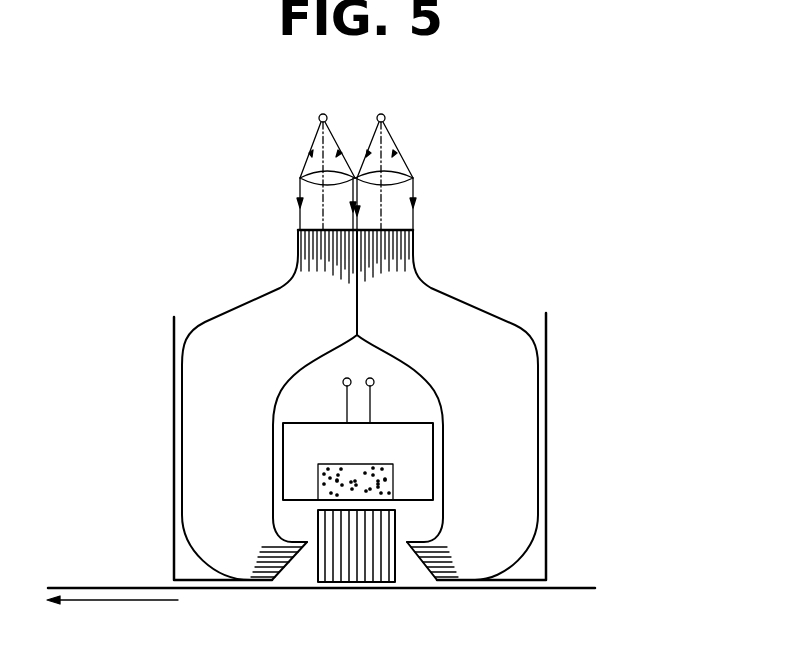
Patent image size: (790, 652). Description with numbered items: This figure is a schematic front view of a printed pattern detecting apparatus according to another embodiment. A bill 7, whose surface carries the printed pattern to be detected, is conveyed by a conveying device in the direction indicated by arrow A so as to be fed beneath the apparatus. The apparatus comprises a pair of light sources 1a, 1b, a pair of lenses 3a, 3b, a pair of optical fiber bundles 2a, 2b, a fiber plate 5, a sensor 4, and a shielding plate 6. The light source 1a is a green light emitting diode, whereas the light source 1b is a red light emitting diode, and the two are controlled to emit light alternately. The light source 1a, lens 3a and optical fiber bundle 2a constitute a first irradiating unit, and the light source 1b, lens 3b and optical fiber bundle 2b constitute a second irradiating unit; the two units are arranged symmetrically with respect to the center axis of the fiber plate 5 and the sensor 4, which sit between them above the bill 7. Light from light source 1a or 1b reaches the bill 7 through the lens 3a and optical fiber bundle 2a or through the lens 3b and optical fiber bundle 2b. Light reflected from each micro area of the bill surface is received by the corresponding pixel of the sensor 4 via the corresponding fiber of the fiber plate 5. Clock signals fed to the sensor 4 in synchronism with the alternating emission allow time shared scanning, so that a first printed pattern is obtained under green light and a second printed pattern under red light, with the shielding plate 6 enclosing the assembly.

The light source 1a is at (319, 118).
The light source 1b is at (385, 118).
The optical fiber bundle 2a is at (258, 297).
The optical fiber bundle 2b is at (502, 318).
The lens 3a is at (299, 181).
The lens 3b is at (414, 181).
The sensor 4 is at (413, 423).
The fiber plate 5 is at (382, 582).
The shielding plate 6 is at (173, 458).
The bill 7 is at (237, 590).
The conveying direction A is at (133, 600).